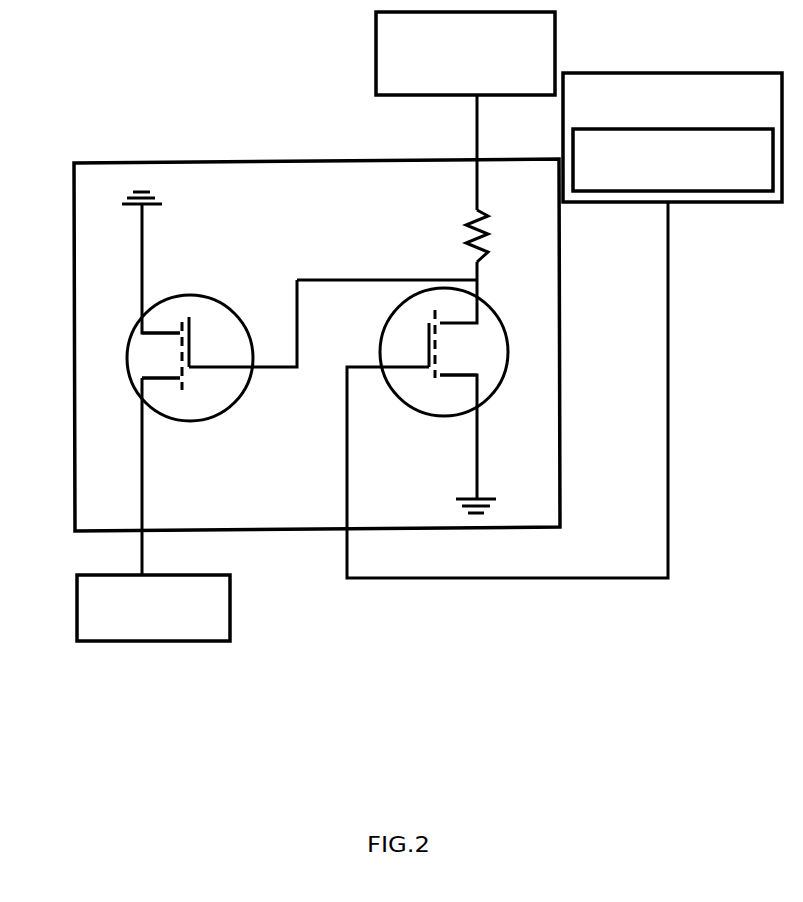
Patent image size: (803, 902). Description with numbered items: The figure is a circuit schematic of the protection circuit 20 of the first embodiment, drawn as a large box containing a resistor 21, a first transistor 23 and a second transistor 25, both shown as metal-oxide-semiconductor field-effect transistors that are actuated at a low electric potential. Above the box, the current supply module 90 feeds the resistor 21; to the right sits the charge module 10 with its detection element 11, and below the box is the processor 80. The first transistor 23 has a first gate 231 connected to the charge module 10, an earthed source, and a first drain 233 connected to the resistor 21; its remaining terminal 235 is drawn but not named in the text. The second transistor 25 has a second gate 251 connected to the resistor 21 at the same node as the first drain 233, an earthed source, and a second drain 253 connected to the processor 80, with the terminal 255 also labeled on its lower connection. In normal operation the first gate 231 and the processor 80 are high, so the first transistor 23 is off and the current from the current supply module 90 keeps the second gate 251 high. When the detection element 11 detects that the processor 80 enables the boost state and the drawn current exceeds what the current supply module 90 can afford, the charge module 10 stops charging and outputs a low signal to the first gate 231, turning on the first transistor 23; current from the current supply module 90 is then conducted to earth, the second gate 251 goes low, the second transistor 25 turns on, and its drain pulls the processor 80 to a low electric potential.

The protection circuit 20 is at (73, 186).
The resistor 21 is at (470, 232).
The first transistor 23 is at (509, 345).
The first gate 231 is at (380, 400).
The first drain 233 is at (478, 405).
The drain of second transistor 235 is at (480, 296).
The second transistor 25 is at (240, 397).
The second gate 251 is at (258, 362).
The second drain 253 is at (140, 318).
The second drain 255 is at (138, 395).
The processor 80 is at (153, 608).
The current supply module 90 is at (465, 53).
The charge module 10 is at (672, 137).
The detection element 11 is at (673, 160).